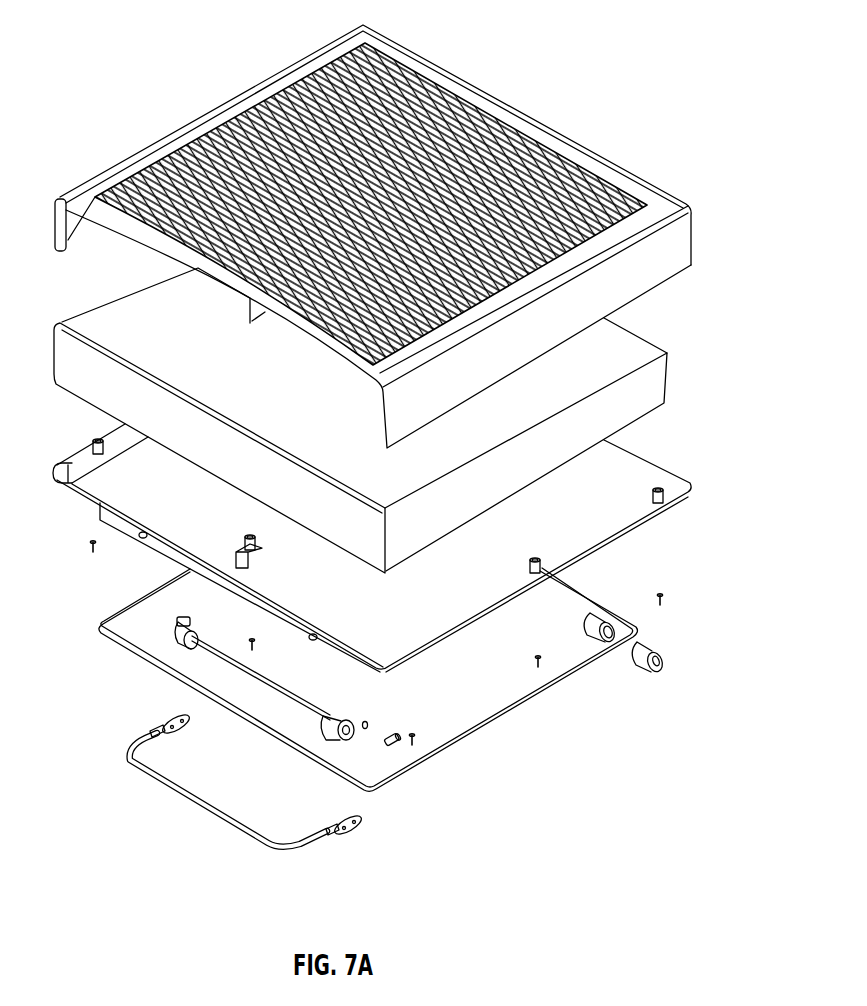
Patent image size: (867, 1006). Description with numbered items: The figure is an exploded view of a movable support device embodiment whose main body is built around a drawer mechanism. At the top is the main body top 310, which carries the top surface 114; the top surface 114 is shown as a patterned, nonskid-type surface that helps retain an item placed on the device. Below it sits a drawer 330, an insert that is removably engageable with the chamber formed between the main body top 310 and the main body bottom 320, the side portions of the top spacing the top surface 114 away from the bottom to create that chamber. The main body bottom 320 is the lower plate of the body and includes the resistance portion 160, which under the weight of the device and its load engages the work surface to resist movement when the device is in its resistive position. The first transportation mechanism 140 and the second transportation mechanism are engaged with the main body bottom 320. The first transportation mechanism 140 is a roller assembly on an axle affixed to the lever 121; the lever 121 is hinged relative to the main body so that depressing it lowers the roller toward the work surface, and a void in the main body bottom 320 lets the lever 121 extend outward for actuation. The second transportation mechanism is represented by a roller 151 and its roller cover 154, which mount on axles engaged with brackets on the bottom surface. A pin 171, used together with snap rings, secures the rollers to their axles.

The main body top 310 is at (307, 55).
The top surface 114 is at (158, 152).
The drawer 330 is at (190, 340).
The main body bottom 320 is at (540, 530).
The resistance portion 160 is at (147, 600).
The first transportation mechanism 140 is at (217, 655).
The lever 121 is at (357, 825).
The pin 171 is at (400, 748).
The roller 151 is at (612, 640).
The roller cover 154 is at (664, 662).